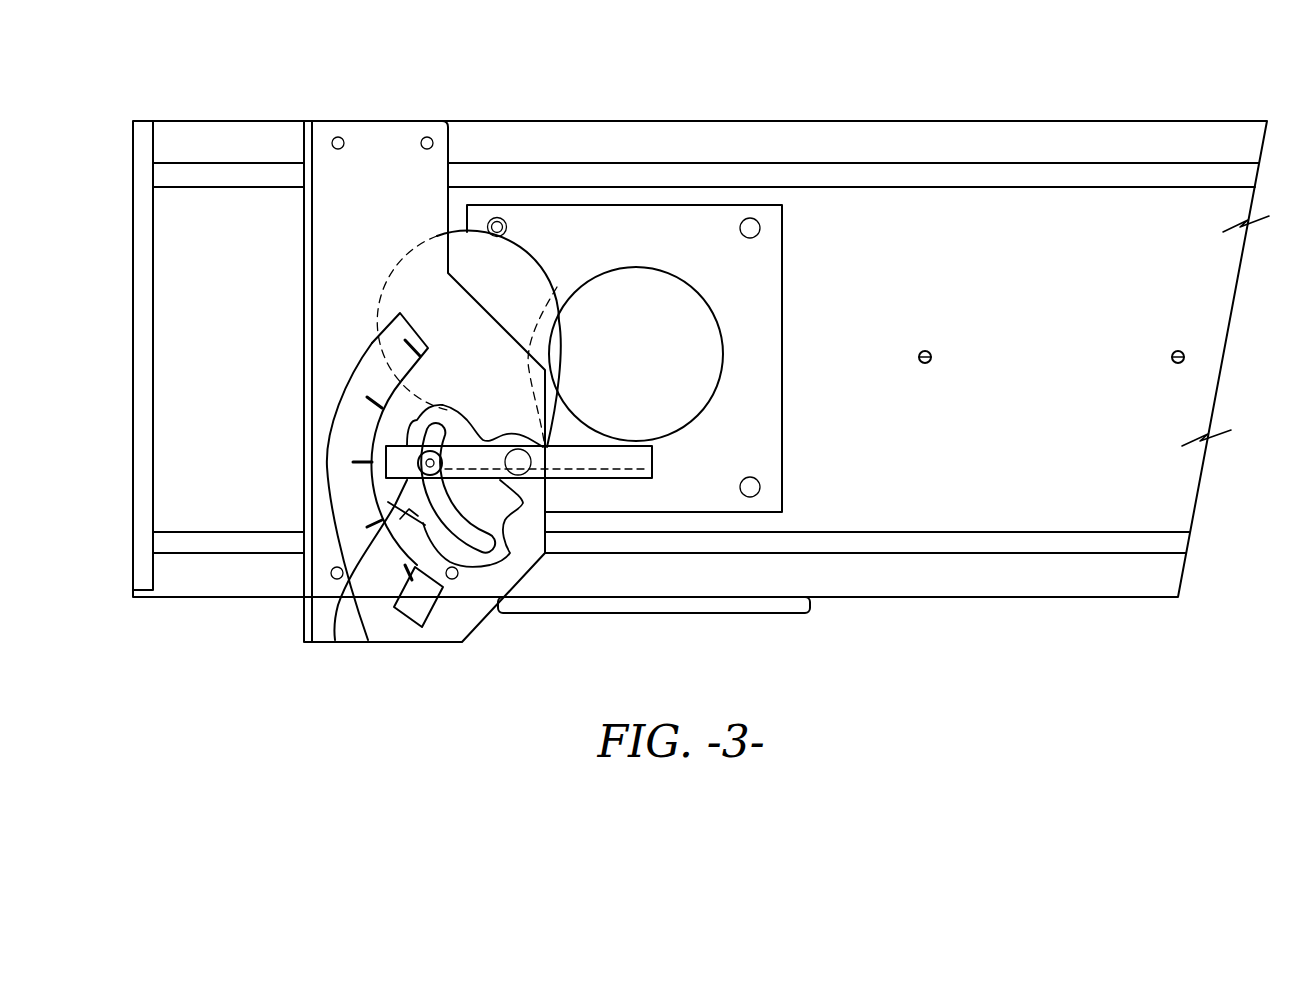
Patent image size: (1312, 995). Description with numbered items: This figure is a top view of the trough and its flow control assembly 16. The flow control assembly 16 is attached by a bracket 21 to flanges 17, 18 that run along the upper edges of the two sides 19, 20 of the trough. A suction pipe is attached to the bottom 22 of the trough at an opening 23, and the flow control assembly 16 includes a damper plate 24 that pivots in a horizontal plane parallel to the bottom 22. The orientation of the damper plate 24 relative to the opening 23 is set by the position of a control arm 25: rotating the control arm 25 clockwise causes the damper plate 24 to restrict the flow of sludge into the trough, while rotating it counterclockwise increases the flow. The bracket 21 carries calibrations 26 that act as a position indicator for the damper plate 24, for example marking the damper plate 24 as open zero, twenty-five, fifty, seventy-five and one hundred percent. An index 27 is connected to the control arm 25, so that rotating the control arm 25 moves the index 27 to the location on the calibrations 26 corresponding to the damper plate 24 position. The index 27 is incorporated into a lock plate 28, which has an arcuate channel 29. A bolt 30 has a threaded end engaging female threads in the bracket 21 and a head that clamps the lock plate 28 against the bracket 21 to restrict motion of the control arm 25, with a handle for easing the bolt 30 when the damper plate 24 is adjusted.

The flow control assembly 16 is at (284, 223).
The flange 17 is at (930, 572).
The flange 18 is at (748, 148).
The side 19 is at (1075, 537).
The side 20 is at (1065, 178).
The bracket 21 is at (385, 167).
The bottom 22 is at (873, 230).
The opening 23 is at (630, 302).
The damper plate 24 is at (512, 275).
The control arm 25 is at (583, 458).
The calibrations 26 is at (372, 595).
The index 27 is at (350, 600).
The lock plate 28 is at (545, 547).
The arcuate channel 29 is at (505, 556).
The bolt 30 is at (430, 463).